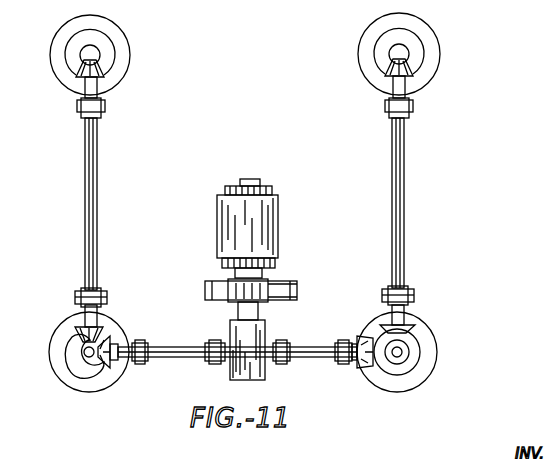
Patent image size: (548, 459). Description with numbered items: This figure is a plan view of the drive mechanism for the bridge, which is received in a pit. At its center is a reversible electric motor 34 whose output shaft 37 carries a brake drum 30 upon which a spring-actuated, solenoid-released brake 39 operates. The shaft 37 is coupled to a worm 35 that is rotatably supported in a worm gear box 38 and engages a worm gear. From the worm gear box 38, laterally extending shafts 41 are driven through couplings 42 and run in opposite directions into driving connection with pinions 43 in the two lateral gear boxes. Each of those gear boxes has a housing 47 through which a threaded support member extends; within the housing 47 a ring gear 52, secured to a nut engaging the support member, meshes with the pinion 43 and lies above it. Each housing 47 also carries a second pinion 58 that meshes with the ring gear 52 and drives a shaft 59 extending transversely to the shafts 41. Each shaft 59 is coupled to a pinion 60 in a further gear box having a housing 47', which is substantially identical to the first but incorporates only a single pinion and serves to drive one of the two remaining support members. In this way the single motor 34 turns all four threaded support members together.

The gauge with split ring 47' is at (261, 54).
The pinion 60 is at (80, 72).
The shaft 59 is at (97, 153).
The coupling 42 is at (104, 297).
The second pinion 58 is at (74, 330).
The ring gear 52 is at (70, 357).
The housing 47 is at (89, 363).
The pinion 43 is at (110, 368).
The laterally extending shaft 41 is at (166, 357).
The brake drum 30 is at (228, 283).
The brake 39 is at (297, 288).
The output shaft 37 is at (262, 274).
The reversible electric motor 34 is at (278, 212).
The worm 35 is at (258, 335).
The worm gear box 38 is at (240, 365).